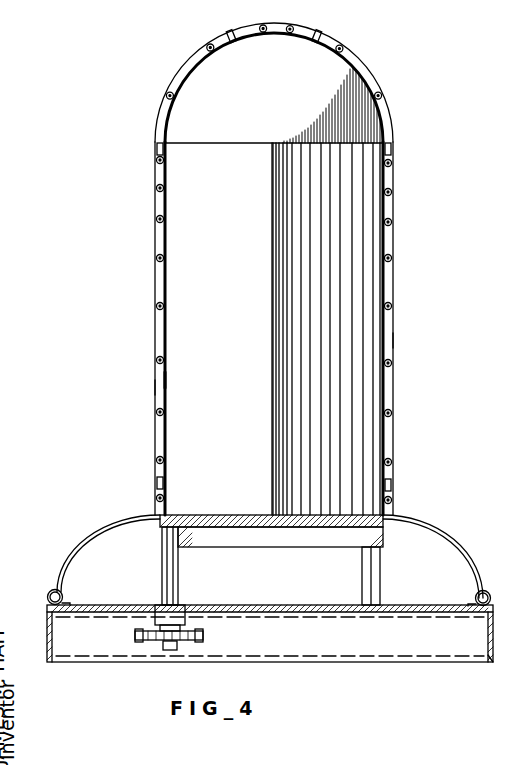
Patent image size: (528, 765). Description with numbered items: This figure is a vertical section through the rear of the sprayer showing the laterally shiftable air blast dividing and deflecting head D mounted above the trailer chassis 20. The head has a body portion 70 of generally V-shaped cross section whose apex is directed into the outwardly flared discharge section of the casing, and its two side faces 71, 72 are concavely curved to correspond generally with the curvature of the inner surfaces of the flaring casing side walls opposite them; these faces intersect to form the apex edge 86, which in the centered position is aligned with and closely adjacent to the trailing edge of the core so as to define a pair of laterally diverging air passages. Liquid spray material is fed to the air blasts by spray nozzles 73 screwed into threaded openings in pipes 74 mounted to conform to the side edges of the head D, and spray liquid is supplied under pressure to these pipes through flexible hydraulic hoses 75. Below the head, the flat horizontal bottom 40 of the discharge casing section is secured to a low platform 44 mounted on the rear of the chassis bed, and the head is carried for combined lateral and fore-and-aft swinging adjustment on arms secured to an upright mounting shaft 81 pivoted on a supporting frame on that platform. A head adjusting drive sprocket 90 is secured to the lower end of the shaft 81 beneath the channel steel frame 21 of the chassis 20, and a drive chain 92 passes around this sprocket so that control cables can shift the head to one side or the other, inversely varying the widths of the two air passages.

The trailer chassis 20 is at (445, 660).
The channel steel frame 21 is at (490, 664).
The flat horizontal bottom 40 is at (235, 517).
The low platform 44 is at (396, 533).
The body portion 70 is at (165, 245).
The side face 71 is at (347, 348).
The side face 72 is at (233, 345).
The spray nozzles 73 is at (266, 25).
The pipes 74 is at (155, 387).
The flexible hydraulic hoses 75 is at (100, 527).
The upright mounting shaft 81 is at (178, 580).
The apex edge 86 is at (272, 388).
The head adjusting drive sprocket 90 is at (157, 641).
The drive chain 92 is at (200, 632).
The shiftable deflector head D is at (186, 381).